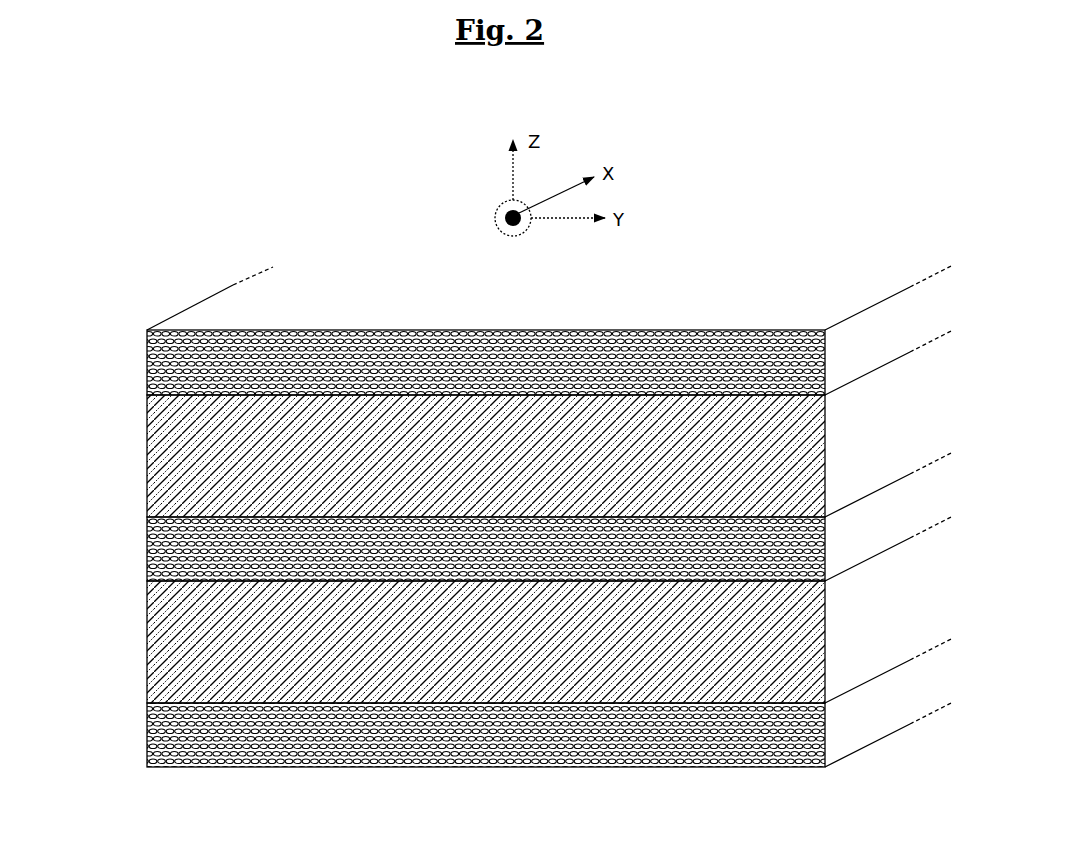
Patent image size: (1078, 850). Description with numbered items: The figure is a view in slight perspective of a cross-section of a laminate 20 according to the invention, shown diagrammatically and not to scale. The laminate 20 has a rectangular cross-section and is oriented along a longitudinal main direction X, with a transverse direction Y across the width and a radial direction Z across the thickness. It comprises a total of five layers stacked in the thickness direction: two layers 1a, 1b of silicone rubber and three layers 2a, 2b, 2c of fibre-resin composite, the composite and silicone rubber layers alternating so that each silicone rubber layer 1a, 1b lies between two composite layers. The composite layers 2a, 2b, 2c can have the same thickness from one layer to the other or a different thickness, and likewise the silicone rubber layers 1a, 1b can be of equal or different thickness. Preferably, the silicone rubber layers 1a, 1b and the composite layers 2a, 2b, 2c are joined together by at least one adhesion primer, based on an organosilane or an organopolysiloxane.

The laminate 20 is at (739, 294).
The layer of fibre-resin composite 2b is at (143, 360).
The layer of silicone rubber 1a is at (143, 451).
The layer of fibre-resin composite 2a is at (143, 557).
The layer of silicone rubber 1b is at (143, 645).
The layer of fibre-resin composite 2c is at (140, 740).